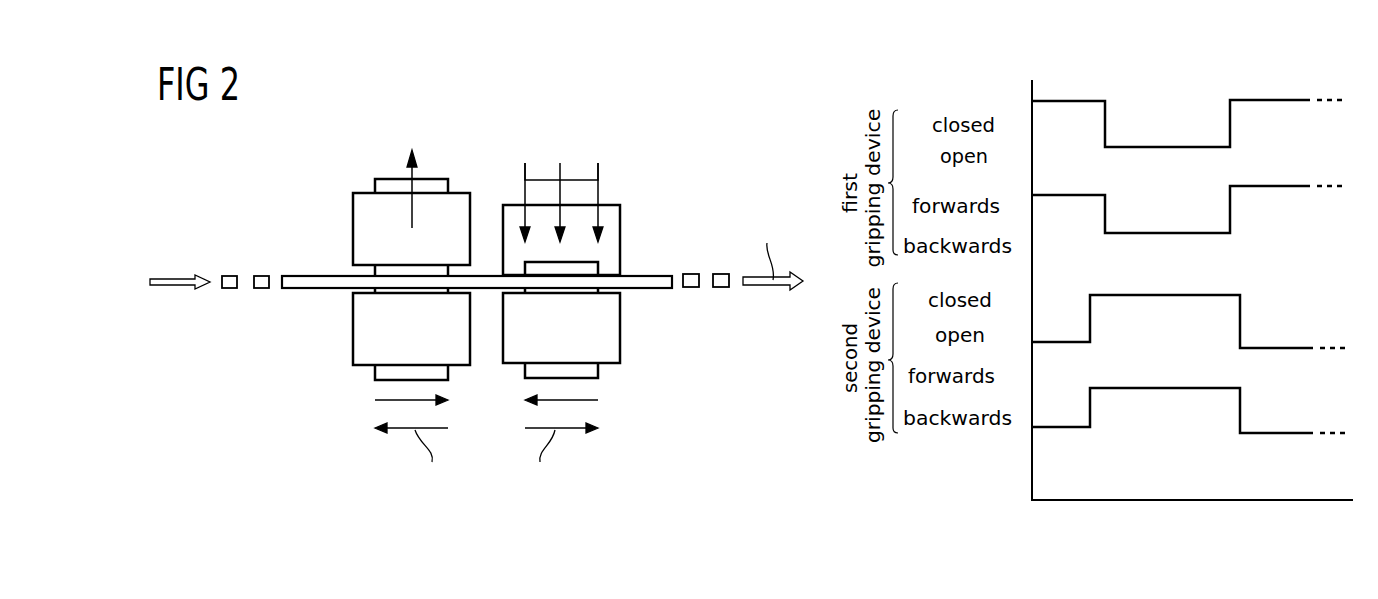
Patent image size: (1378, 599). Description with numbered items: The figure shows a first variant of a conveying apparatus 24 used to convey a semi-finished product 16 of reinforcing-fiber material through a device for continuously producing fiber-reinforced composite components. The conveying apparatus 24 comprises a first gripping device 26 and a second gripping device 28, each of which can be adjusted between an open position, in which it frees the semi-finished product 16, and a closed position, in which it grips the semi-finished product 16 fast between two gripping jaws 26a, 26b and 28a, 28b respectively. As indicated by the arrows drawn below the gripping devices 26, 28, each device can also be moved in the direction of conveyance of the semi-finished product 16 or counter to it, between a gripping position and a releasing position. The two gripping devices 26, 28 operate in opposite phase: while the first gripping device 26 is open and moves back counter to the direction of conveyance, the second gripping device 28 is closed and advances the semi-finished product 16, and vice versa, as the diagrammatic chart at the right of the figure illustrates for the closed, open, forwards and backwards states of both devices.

The semi-finished product 16 is at (293, 290).
The conveying apparatus 24 is at (650, 110).
The first gripping device 26 is at (347, 195).
The gripping jaw 26a is at (365, 337).
The gripping jaw 26b is at (365, 230).
The second gripping device 28 is at (626, 203).
The gripping jaw 28a is at (612, 333).
The gripping jaw 28b is at (612, 248).